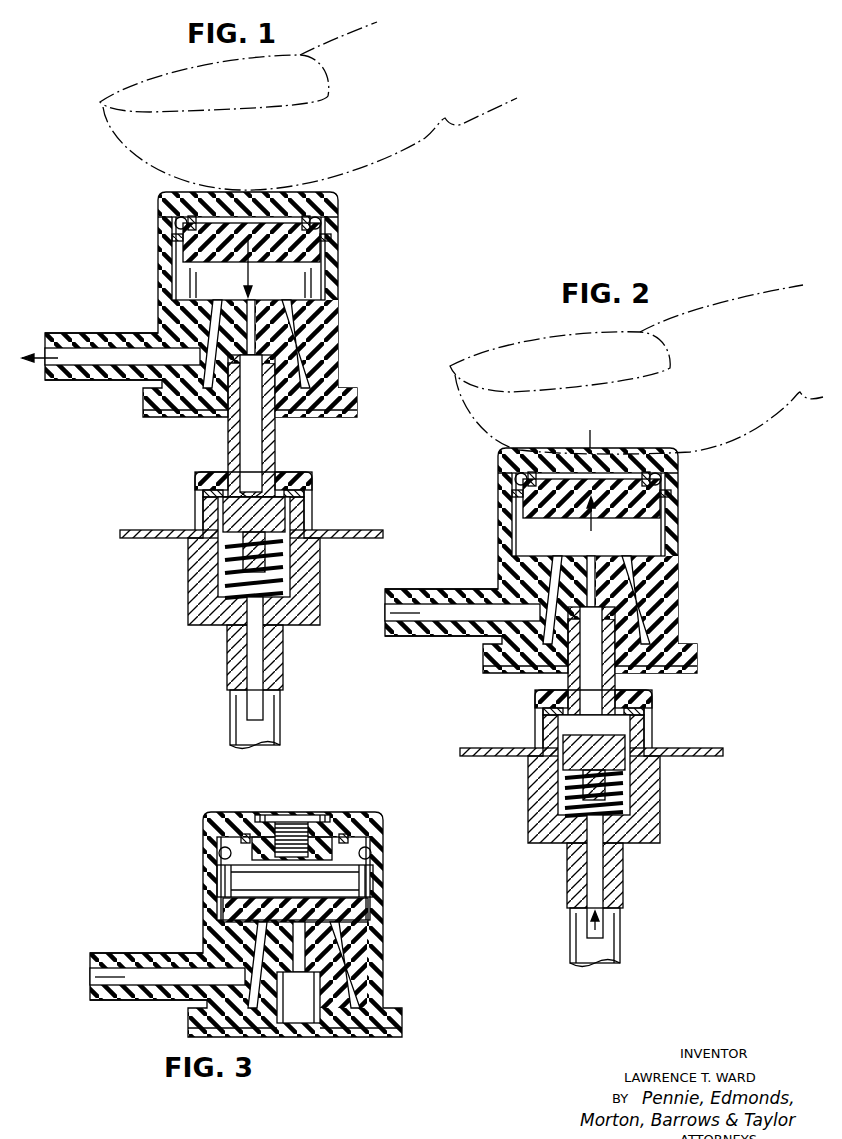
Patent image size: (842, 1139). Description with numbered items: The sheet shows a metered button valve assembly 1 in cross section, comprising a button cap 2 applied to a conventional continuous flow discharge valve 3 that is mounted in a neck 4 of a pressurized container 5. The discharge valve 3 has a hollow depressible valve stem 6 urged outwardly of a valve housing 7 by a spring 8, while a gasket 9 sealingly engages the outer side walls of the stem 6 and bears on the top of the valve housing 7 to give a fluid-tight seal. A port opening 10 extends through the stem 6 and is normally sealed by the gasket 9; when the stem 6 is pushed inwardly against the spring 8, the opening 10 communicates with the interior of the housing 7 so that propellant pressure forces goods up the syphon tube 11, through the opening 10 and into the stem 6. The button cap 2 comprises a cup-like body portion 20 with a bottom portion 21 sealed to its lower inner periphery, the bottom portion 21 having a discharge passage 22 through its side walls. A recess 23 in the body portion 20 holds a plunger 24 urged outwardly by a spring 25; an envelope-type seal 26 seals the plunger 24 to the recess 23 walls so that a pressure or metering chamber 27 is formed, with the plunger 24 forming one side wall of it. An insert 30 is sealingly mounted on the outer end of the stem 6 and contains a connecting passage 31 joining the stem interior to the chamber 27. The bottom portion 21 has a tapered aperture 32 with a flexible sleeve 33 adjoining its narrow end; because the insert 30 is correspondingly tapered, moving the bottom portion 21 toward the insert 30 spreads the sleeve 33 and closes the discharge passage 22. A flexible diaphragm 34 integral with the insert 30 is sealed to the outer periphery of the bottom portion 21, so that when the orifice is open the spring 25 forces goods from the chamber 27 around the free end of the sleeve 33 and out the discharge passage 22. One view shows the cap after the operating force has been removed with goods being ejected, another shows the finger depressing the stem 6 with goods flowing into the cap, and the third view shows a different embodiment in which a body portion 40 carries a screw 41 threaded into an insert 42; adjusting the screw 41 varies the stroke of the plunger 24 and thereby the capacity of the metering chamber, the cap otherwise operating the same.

In FIG. 1, the metered button valve assembly 1 is at (207, 346).
In FIG. 2, the metered button valve assembly 1 is at (555, 584).
In FIG. 1, the button cap 2 is at (332, 232).
In FIG. 2, the button cap 2 is at (601, 475).
In FIG. 1, the continuous flow discharge valve 3 is at (206, 462).
In FIG. 2, the continuous flow discharge valve 3 is at (588, 828).
In FIG. 1, the neck 4 is at (196, 485).
In FIG. 2, the neck 4 is at (577, 719).
In FIG. 1, the pressurized container 5 is at (170, 536).
In FIG. 2, the pressurized container 5 is at (588, 737).
In FIG. 1, the hollow depressible valve stem 6 is at (270, 437).
In FIG. 2, the hollow depressible valve stem 6 is at (619, 672).
In FIG. 1, the valve housing 7 is at (188, 563).
In FIG. 2, the valve housing 7 is at (576, 779).
In FIG. 1, the spring 8 is at (228, 590).
In FIG. 2, the spring 8 is at (558, 794).
In FIG. 1, the gasket 9 is at (283, 492).
In FIG. 2, the gasket 9 is at (607, 708).
In FIG. 1, the port opening 10 is at (232, 490).
In FIG. 2, the port opening 10 is at (566, 759).
In FIG. 1, the syphon tube 11 is at (262, 734).
In FIG. 2, the syphon tube 11 is at (617, 940).
In FIG. 1, the cup-like body portion 20 is at (160, 272).
In FIG. 2, the cup-like body portion 20 is at (559, 514).
In FIG. 1, the bottom portion 21 is at (140, 340).
In FIG. 2, the bottom portion 21 is at (462, 602).
In FIG. 3, the bottom portion 21 is at (167, 963).
In FIG. 1, the discharge passage 22 is at (70, 345).
In FIG. 2, the discharge passage 22 is at (405, 591).
In FIG. 3, the discharge passage 22 is at (107, 951).
In FIG. 1, the recess 23 is at (175, 225).
In FIG. 2, the recess 23 is at (559, 474).
In FIG. 3, the recess 23 is at (265, 836).
In FIG. 1, the plunger 24 is at (312, 250).
In FIG. 2, the plunger 24 is at (620, 515).
In FIG. 3, the plunger 24 is at (320, 909).
In FIG. 1, the spring 25 is at (172, 248).
In FIG. 2, the spring 25 is at (564, 495).
In FIG. 3, the spring 25 is at (266, 875).
In FIG. 1, the envelope-type seal 26 is at (330, 292).
In FIG. 2, the envelope-type seal 26 is at (614, 514).
In FIG. 1, the pressure or metering chamber 27 is at (192, 285).
In FIG. 1, the insert 30 is at (222, 404).
In FIG. 2, the insert 30 is at (533, 623).
In FIG. 3, the insert 30 is at (289, 989).
In FIG. 1, the connecting passage 31 is at (262, 352).
In FIG. 2, the connecting passage 31 is at (652, 583).
In FIG. 3, the connecting passage 31 is at (355, 947).
In FIG. 1, the tapered aperture 32 is at (298, 378).
In FIG. 1, the flexible sleeve 33 is at (300, 362).
In FIG. 2, the flexible sleeve 33 is at (669, 600).
In FIG. 3, the flexible sleeve 33 is at (374, 965).
In FIG. 1, the flexible diaphragm 34 is at (318, 416).
In FIG. 2, the flexible diaphragm 34 is at (595, 680).
In FIG. 3, the flexible diaphragm 34 is at (295, 1042).
In FIG. 3, the body portion 40 is at (254, 922).
In FIG. 3, the screw 41 is at (298, 822).
In FIG. 3, the insert 42 is at (280, 824).